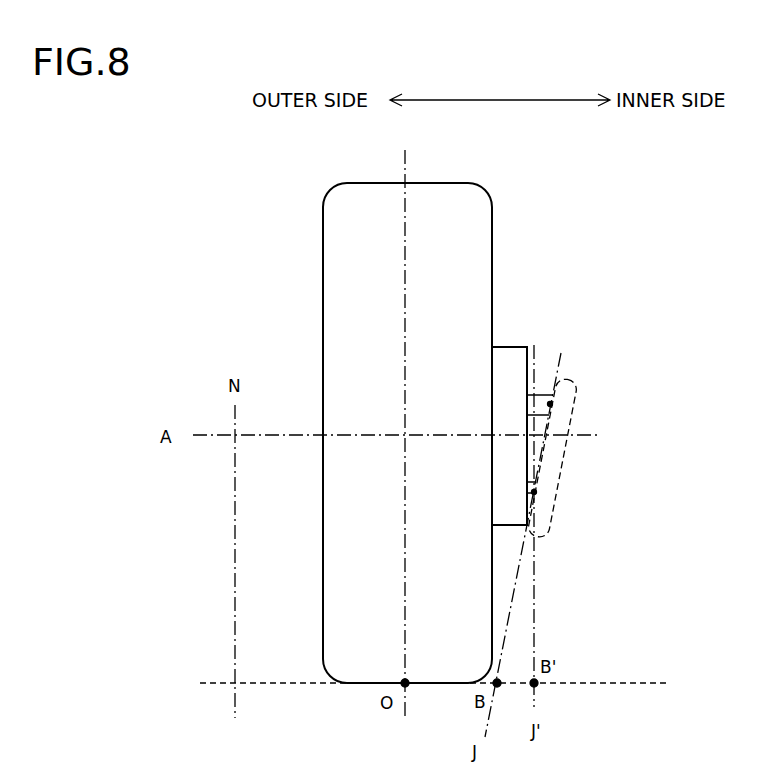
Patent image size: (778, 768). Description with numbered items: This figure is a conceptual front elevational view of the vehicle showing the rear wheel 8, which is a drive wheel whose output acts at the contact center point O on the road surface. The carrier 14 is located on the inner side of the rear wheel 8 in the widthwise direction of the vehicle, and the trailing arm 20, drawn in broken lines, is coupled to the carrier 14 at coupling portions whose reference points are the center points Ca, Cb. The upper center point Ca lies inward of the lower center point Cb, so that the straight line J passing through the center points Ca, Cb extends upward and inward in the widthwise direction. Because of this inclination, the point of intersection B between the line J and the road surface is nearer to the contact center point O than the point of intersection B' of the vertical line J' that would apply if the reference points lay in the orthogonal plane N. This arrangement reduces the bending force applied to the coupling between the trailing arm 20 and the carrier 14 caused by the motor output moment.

The rear wheel 8 is at (302, 321).
The carrier 14 is at (503, 345).
The trailing arm 20 is at (563, 422).
The center point Ca is at (552, 404).
The center point Cb is at (536, 492).